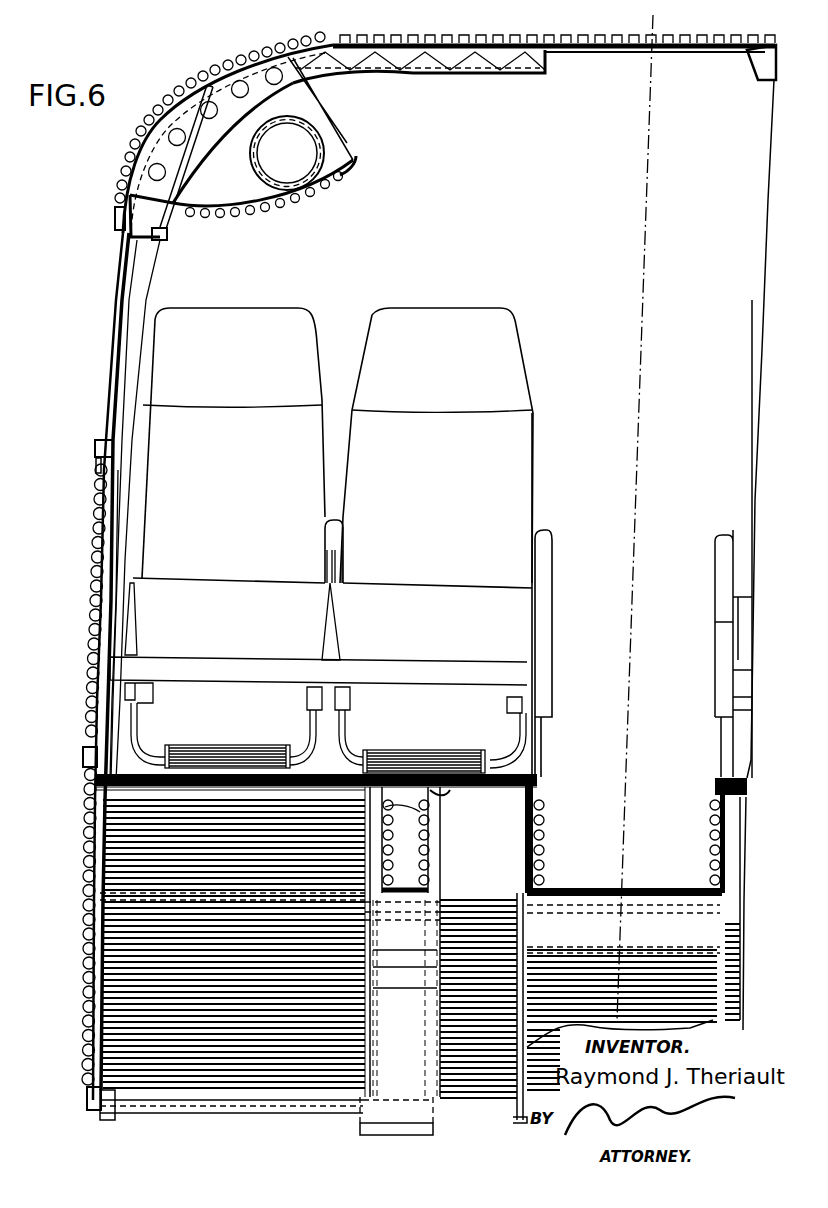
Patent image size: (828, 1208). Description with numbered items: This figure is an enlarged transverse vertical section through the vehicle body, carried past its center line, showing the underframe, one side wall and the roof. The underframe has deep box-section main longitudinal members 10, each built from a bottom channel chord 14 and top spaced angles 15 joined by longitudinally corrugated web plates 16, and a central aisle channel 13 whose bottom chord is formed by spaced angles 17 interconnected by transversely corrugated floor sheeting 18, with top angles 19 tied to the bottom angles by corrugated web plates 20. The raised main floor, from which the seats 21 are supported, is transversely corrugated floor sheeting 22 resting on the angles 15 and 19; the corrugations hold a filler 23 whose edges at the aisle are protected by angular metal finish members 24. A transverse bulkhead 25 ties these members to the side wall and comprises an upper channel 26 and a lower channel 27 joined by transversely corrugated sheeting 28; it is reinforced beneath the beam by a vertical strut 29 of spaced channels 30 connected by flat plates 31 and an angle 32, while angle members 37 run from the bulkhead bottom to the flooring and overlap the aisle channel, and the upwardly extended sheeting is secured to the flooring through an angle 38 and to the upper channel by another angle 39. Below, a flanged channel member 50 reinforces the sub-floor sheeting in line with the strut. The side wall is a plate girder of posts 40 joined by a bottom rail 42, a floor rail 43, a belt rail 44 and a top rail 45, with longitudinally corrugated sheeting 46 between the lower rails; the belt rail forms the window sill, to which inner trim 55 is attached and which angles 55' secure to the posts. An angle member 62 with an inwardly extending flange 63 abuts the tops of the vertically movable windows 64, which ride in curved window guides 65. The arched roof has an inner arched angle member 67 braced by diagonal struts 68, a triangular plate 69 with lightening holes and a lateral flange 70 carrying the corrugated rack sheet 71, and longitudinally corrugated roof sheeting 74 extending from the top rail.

The main longitudinal members 10 is at (430, 849).
The channel 13 is at (544, 842).
The bottom channel chord 14 is at (395, 905).
The top spaced angles 15 is at (448, 796).
The longitudinally corrugated web plates 16 is at (406, 842).
The spaced angles 17 is at (545, 906).
The transversely corrugated floor sheeting 18 is at (648, 885).
The top angles 19 is at (540, 790).
The longitudinally corrugated web plates 20 is at (544, 820).
The seats 21 is at (520, 659).
The transversely corrugated floor sheeting 22 is at (497, 787).
The filler 23 is at (510, 775).
The angular metal finish members 24 is at (535, 786).
The transverse bulkheads 25 is at (147, 1115).
The upper channel 26 is at (585, 906).
The lower channel 27 is at (245, 1100).
The transversely corrugated sheeting 28 is at (220, 1050).
The vertical struts 29 is at (355, 1027).
The spaced channels 30 is at (373, 860).
The flat plates 31 is at (437, 1077).
The angle 32 is at (428, 913).
The angle members 37 is at (517, 1080).
The angle 38 is at (328, 738).
The angle 39 is at (133, 888).
The posts 40 is at (92, 662).
The bottom rail 42 is at (87, 1101).
The floor rail 43 is at (85, 768).
The belt rail 44 is at (95, 462).
The top rail 45 is at (117, 222).
The longitudinally corrugated sheeting 46 is at (93, 584).
The flanged channel members 50 is at (400, 1135).
The inner trim 55 is at (137, 625).
The angles 55' is at (80, 444).
The angle member 62 is at (168, 233).
The inwardly extending flange 63 is at (160, 246).
The windows 64 is at (140, 282).
The curved window guides 65 is at (200, 89).
The inner arched angle member 67 is at (478, 60).
The diagonal struts 68 is at (338, 58).
The plate 69 is at (232, 182).
The flange 70 is at (328, 135).
The longitudinally corrugated sheet 71 is at (237, 212).
The longitudinally corrugated roof sheeting 74 is at (363, 42).